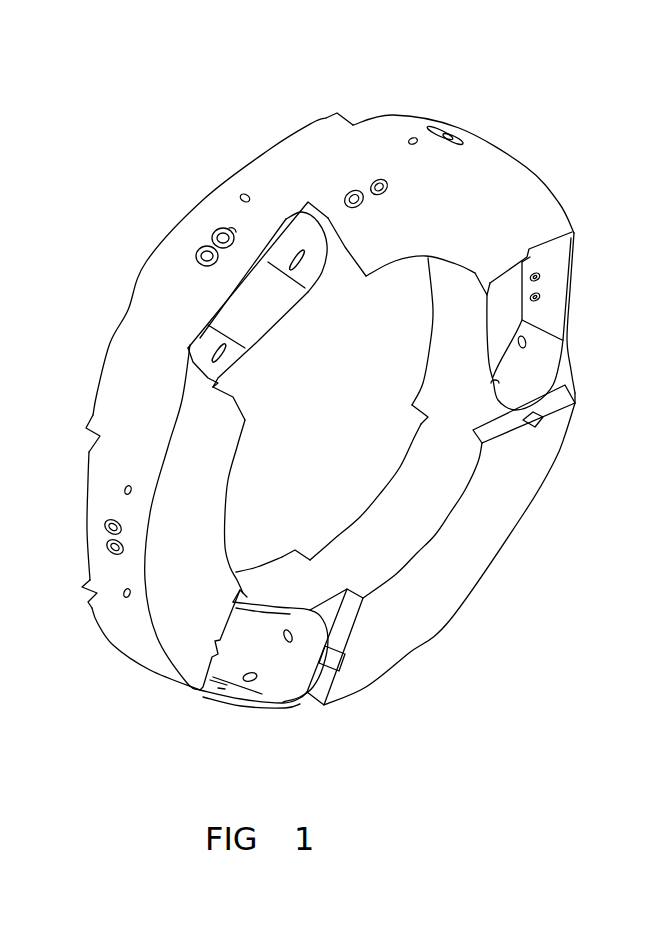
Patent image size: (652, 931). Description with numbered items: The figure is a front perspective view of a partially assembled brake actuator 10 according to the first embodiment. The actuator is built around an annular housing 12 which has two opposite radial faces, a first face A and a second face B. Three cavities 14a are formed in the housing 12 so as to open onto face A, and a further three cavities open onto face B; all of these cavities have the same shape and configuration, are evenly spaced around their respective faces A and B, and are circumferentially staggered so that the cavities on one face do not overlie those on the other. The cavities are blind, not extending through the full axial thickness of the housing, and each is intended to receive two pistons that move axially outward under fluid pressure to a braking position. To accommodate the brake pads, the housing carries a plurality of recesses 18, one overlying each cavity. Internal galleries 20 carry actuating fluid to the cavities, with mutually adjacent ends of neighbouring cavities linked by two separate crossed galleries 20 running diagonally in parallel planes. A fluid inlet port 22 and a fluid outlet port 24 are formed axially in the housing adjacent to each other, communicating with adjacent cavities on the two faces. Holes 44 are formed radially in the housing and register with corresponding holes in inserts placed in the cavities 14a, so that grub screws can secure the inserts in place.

The brake actuator 10 is at (326, 405).
The annular housing 12 is at (310, 120).
The cavity 14a is at (290, 684).
The recess 18 is at (85, 500).
The internal gallery 20 is at (253, 667).
The fluid inlet port 22 is at (357, 187).
The fluid outlet port 24 is at (386, 174).
The hole 44 is at (213, 230).
The first radial face A is at (468, 213).
The second radial face B is at (122, 305).